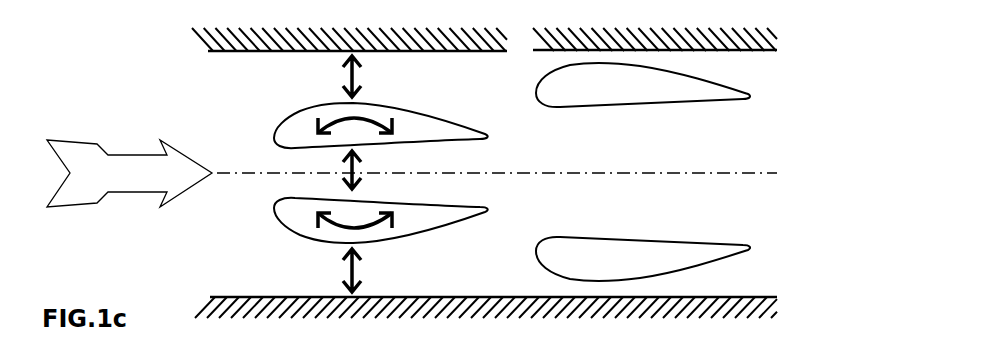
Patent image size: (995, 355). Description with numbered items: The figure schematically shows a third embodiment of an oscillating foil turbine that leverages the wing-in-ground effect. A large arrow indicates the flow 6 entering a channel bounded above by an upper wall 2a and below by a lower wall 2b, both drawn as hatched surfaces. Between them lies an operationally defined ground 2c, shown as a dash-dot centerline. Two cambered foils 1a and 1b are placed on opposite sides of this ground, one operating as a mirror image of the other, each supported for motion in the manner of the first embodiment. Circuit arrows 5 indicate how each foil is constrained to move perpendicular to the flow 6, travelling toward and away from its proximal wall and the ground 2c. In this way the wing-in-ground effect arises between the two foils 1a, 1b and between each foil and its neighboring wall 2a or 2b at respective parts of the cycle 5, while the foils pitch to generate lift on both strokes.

The foil 1a is at (617, 98).
The foil 1b is at (622, 270).
The wall 2a is at (403, 52).
The wall 2b is at (407, 295).
The operationally defined ground 2c is at (550, 168).
The circuit arrow 5 is at (343, 75).
The flow 6 is at (126, 185).